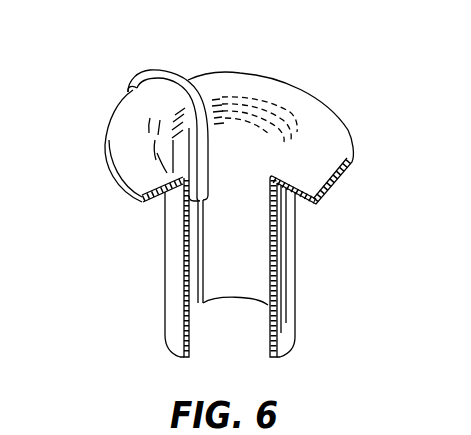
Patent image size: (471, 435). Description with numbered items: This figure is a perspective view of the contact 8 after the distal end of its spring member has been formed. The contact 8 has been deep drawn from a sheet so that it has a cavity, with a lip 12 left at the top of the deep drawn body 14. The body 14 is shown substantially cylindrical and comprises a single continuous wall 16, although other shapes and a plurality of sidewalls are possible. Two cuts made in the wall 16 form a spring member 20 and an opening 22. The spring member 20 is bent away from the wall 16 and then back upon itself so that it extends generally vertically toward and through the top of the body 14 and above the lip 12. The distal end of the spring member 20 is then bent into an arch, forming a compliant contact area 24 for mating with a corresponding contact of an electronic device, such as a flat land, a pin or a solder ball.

The contact 8 is at (296, 50).
The lip 12 is at (350, 125).
The deep drawn body 14 is at (295, 270).
The wall 16 is at (165, 267).
The spring member 20 is at (197, 147).
The opening 22 is at (205, 311).
The compliant contact area 24 is at (153, 68).